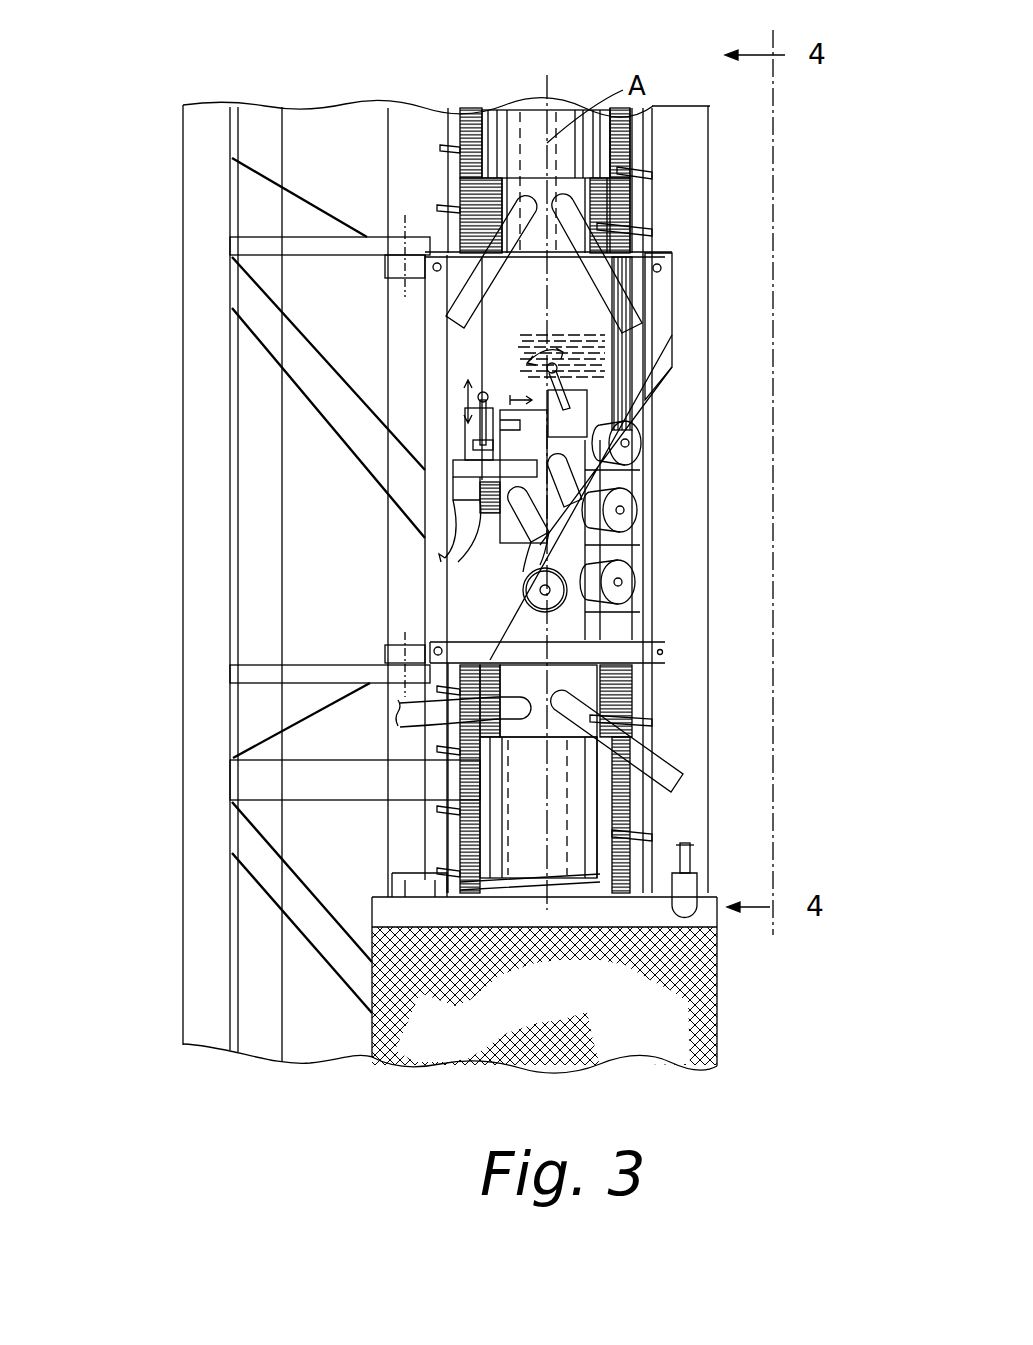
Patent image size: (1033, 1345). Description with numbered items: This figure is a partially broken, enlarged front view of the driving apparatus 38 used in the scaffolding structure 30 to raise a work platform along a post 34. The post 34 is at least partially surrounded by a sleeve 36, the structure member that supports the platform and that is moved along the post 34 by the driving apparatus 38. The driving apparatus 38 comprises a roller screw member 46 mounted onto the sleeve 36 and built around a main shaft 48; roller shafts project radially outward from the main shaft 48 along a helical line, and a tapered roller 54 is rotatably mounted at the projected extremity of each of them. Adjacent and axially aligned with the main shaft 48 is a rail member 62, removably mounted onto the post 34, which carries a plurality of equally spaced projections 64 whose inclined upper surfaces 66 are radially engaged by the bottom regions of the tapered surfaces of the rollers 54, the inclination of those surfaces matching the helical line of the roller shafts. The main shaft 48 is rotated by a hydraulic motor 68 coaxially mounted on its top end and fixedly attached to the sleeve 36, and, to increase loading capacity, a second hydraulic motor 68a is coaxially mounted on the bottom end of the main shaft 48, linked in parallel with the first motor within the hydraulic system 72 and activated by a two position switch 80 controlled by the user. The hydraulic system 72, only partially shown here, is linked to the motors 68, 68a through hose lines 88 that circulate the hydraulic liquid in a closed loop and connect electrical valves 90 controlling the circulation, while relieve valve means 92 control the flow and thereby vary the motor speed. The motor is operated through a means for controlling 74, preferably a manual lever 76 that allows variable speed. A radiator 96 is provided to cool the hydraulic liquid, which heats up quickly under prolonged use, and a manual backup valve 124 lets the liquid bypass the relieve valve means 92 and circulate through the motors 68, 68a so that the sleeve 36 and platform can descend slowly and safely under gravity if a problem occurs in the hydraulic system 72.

The scaffolding structure 30 is at (135, 167).
The post 34 is at (272, 138).
The sleeve 36 is at (186, 632).
The driving apparatus 38 is at (627, 547).
The roller screw member 46 is at (617, 508).
The main shaft 48 is at (587, 625).
The roller 54 is at (618, 440).
The rail member 62 is at (468, 118).
The projections 64 is at (640, 195).
The inclined upper surfaces 66 is at (637, 160).
The hydraulic motor 68 is at (547, 147).
The second hydraulic motor 68a is at (593, 820).
The hydraulic system 72 is at (532, 540).
The means for controlling 74 is at (467, 448).
The manual lever 76 is at (483, 392).
The two position switch 80 is at (523, 476).
The hose lines 88 is at (630, 477).
The electrical valves 90 is at (577, 440).
The relieve valve means 92 is at (465, 432).
The radiator 96 is at (703, 997).
The manual backup valve 124 is at (528, 398).